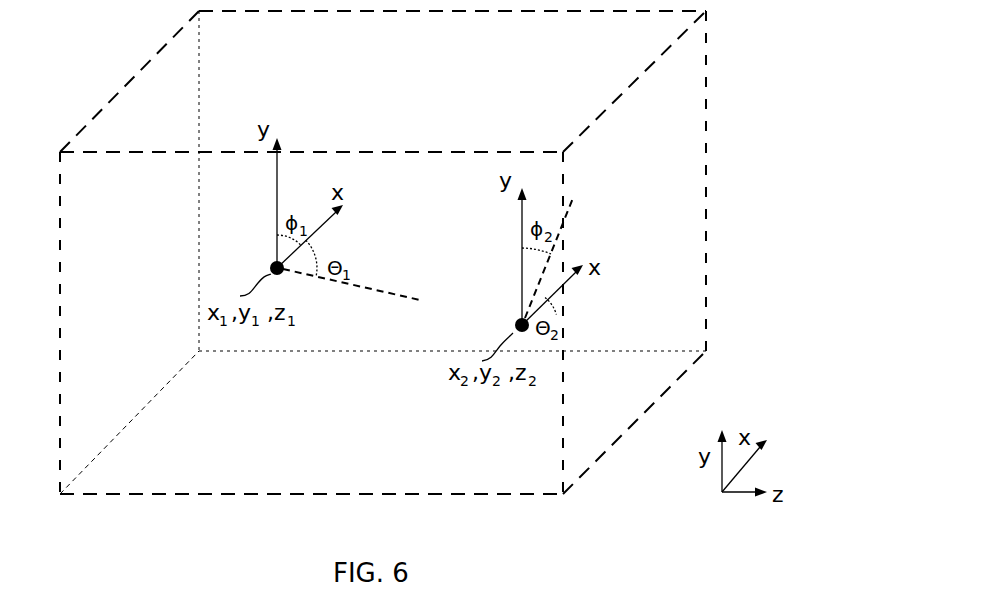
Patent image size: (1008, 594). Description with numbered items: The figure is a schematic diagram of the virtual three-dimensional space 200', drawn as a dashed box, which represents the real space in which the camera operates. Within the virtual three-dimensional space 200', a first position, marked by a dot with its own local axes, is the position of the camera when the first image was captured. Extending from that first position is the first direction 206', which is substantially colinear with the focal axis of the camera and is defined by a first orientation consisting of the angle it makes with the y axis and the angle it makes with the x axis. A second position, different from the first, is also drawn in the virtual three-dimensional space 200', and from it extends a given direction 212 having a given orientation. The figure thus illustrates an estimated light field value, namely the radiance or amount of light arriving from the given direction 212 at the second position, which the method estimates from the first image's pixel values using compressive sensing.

The virtual three-dimensional space 200' is at (425, 252).
The first direction 206' is at (374, 261).
The given direction 212 is at (575, 203).